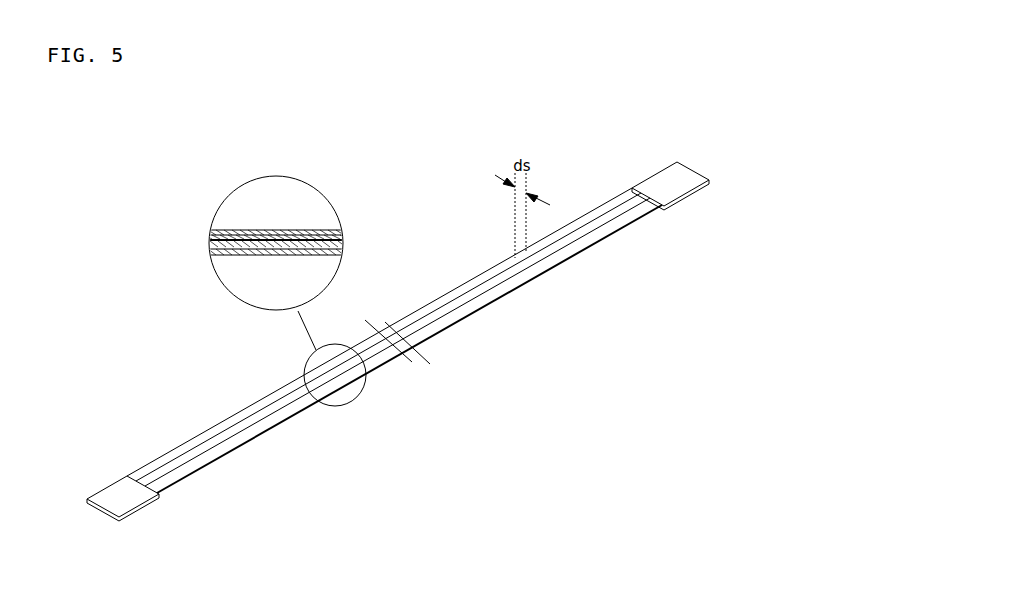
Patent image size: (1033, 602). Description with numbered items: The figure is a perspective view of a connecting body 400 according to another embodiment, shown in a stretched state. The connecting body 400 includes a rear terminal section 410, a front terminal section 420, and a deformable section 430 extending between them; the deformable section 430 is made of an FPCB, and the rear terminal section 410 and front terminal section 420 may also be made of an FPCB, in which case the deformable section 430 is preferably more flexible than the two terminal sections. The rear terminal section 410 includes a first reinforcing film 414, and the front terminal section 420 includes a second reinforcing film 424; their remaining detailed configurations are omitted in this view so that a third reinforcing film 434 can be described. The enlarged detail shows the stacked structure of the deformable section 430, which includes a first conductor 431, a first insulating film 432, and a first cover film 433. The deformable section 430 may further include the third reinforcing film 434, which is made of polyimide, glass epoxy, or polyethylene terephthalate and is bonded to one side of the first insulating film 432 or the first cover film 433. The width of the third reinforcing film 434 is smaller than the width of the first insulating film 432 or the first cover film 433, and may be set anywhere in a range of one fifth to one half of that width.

The connecting body 400 is at (130, 160).
The rear terminal section 410 is at (643, 173).
The first reinforcing film 414 is at (686, 200).
The front terminal section 420 is at (107, 475).
The second reinforcing film 424 is at (140, 505).
The deformable section 430 is at (440, 290).
The first conductor 431 is at (257, 252).
The first insulating film 432 is at (300, 240).
The first cover film 433 is at (300, 247).
The third reinforcing film 434 is at (492, 292).